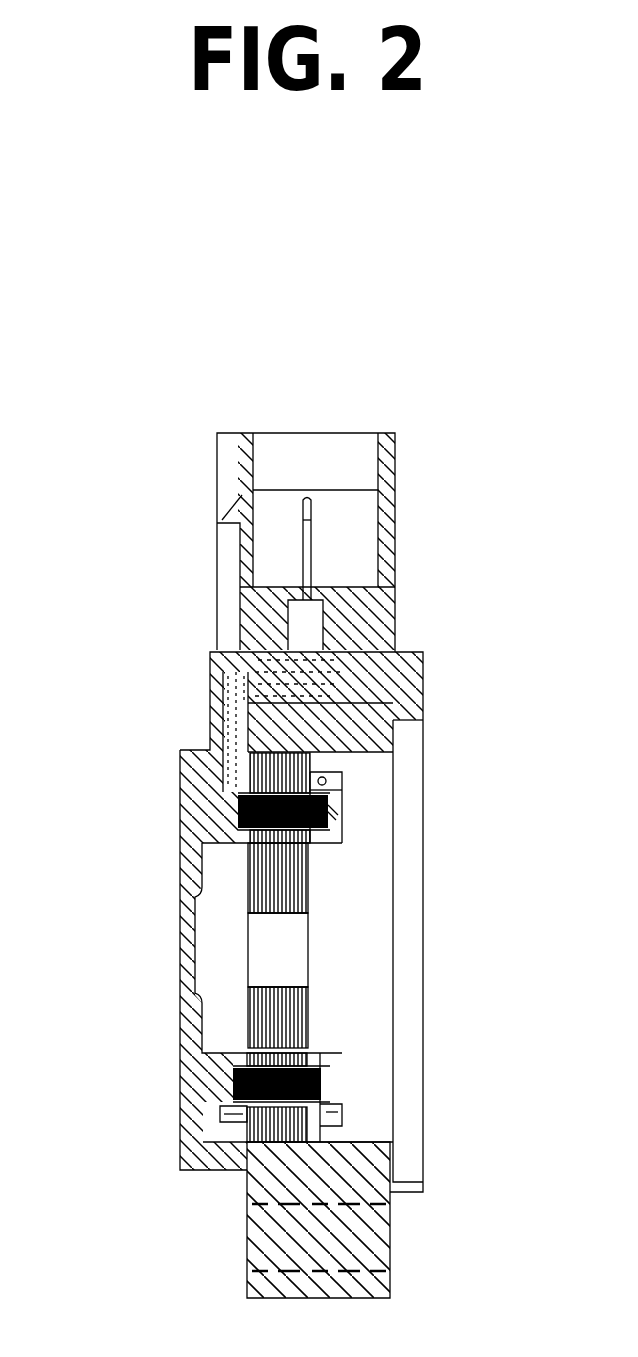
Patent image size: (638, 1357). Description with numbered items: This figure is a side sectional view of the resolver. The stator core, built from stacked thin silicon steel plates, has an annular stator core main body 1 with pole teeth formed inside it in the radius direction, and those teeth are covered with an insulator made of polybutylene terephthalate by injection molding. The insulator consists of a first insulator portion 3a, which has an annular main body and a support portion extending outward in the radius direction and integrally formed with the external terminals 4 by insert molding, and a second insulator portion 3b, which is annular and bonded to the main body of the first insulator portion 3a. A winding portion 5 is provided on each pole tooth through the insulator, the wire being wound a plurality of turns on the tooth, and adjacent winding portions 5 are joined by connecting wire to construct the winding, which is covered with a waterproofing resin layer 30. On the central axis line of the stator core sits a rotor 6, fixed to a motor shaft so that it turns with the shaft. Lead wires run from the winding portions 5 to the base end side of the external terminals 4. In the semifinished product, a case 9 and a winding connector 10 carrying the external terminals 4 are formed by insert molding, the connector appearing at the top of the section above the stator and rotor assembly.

The stator core main body 1 is at (247, 1140).
The first insulator portion 3a is at (230, 1107).
The second insulator portion 3b is at (340, 1113).
The external terminals 4 is at (313, 537).
The winding portion 5 is at (343, 812).
The rotor 6 is at (310, 885).
The case 9 is at (180, 800).
The winding connector 10 is at (217, 476).
The waterproofing resin layer 30 is at (343, 778).